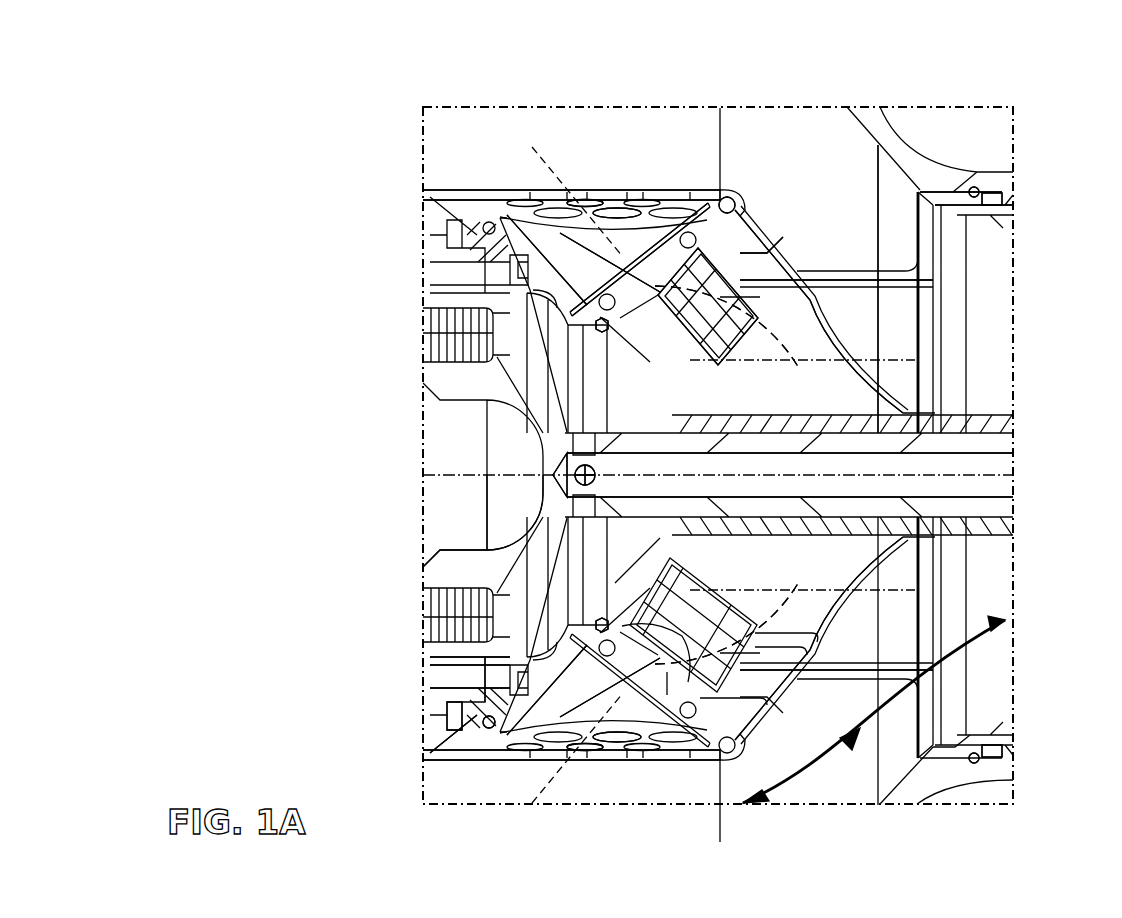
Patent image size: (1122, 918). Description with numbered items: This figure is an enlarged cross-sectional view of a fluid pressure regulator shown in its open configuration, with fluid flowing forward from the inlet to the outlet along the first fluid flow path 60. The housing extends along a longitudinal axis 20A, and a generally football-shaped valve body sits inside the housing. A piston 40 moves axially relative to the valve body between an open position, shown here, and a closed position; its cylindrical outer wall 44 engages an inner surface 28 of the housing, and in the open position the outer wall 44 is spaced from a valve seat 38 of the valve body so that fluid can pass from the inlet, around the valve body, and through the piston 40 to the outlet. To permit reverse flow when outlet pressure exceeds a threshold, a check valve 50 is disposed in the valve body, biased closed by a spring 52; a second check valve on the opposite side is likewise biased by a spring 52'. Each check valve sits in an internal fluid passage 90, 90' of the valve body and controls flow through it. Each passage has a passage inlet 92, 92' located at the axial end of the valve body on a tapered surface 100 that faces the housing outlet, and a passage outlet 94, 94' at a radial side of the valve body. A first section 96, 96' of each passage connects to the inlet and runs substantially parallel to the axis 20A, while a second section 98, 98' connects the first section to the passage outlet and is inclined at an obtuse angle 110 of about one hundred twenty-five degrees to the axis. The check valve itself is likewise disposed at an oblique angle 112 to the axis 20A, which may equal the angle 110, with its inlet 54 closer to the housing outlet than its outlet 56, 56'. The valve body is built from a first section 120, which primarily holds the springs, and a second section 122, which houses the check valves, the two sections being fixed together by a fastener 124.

The longitudinal axis 20A is at (1013, 470).
The inner surface 28 is at (1000, 195).
The valve seat 38 is at (757, 232).
The piston 40 is at (462, 558).
The cylindrical outer wall 44 is at (985, 207).
The check valve 50 is at (656, 232).
The spring 52 is at (472, 348).
The spring 52' is at (473, 614).
The check valve inlet 54 is at (857, 300).
The check valve outlet 56 is at (583, 177).
The check valve outlet 56' is at (608, 748).
The first fluid flow path 60 is at (900, 703).
The fluid passage 90 is at (919, 312).
The fluid passage 90' is at (915, 637).
The passage inlet 92 is at (916, 319).
The passage inlet 92' is at (907, 638).
The passage outlet 94 is at (571, 127).
The passage outlet 94' is at (571, 800).
The first section 96 is at (753, 271).
The first section 96' is at (872, 585).
The second section 98 is at (604, 151).
The second section 98' is at (604, 771).
The tapered surface 100 is at (750, 236).
The angle 110 is at (780, 300).
The angle 112 is at (751, 178).
The first section 120 is at (447, 730).
The second section 122 is at (493, 750).
The fastener 124 is at (447, 683).